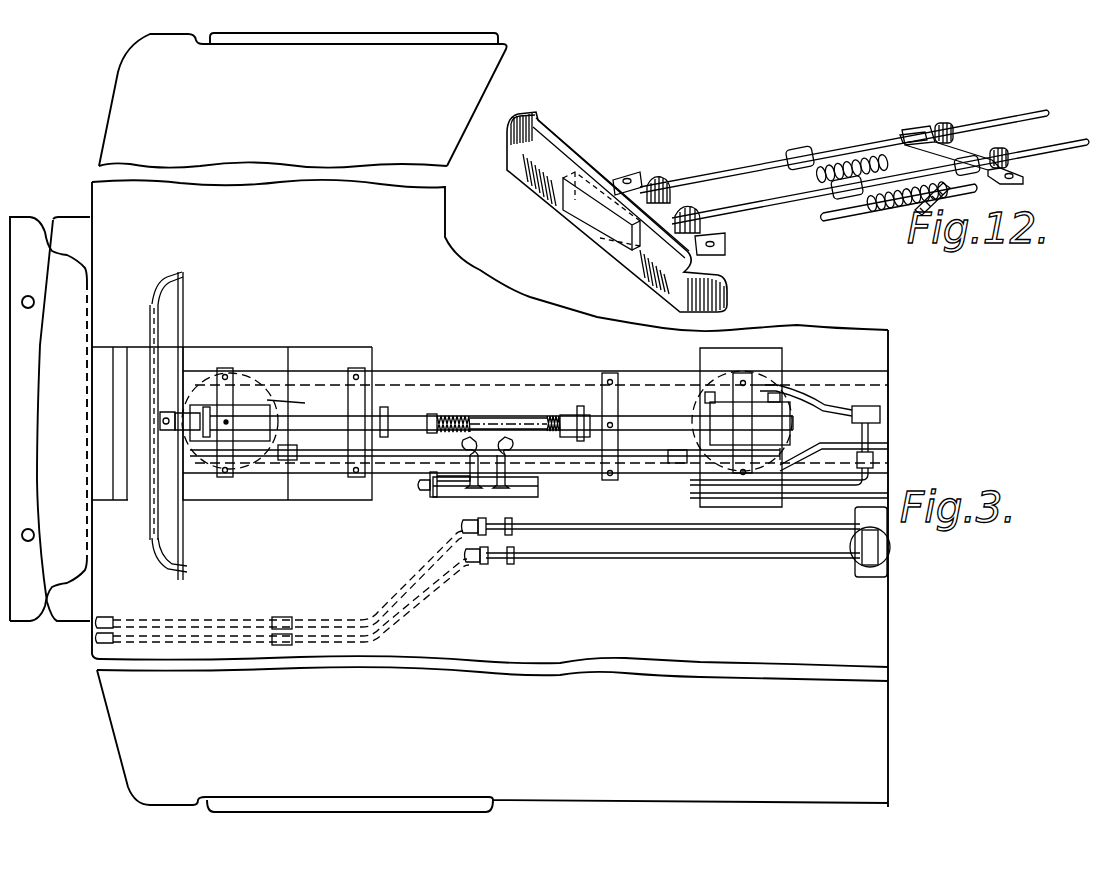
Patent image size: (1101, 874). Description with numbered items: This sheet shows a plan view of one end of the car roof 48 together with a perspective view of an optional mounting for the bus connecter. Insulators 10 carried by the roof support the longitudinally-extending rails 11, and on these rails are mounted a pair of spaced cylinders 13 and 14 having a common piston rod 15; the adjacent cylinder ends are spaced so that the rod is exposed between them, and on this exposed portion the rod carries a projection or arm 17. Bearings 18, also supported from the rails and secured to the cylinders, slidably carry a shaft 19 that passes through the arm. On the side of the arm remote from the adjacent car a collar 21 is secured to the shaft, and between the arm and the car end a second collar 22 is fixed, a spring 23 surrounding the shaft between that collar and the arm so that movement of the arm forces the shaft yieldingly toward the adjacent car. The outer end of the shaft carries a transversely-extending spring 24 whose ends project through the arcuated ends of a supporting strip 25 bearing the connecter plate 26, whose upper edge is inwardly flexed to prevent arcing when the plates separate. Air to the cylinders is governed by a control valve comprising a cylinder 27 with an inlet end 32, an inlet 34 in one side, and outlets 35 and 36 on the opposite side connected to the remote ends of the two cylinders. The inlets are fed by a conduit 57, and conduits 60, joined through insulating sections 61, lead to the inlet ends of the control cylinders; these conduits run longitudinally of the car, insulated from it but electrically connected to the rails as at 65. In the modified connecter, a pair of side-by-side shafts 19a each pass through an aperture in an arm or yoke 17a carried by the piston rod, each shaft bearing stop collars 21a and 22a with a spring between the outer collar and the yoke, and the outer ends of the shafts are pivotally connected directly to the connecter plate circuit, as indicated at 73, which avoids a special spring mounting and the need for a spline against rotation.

In FIG. 3, the insulators 10 is at (795, 413).
In FIG. 3, the rails 11 is at (490, 378).
In FIG. 3, the cylinder 13 is at (648, 410).
In FIG. 3, the cylinder 14 is at (323, 435).
In FIG. 12, the piston rod 15 is at (880, 217).
In FIG. 3, the arm 17 is at (566, 413).
In FIG. 12, the arm (yoke) 17a is at (891, 128).
In FIG. 3, the bearings 18 is at (226, 432).
In FIG. 3, the shaft 19 is at (403, 415).
In FIG. 12, the shafts 19a is at (763, 230).
In FIG. 3, the collar 21 is at (578, 432).
In FIG. 12, the stop collar 21a is at (914, 128).
In FIG. 3, the second collar 22 is at (432, 413).
In FIG. 12, the stop collar 22a is at (843, 226).
In FIG. 3, the spring 23 is at (453, 418).
In FIG. 12, the spring 23 is at (847, 147).
In FIG. 3, the transversely-extending spring 24 is at (182, 325).
In FIG. 3, the supporting strip 25 is at (166, 278).
In FIG. 3, the connecter plate 26 is at (150, 330).
In FIG. 12, the connecter plate 26 is at (550, 200).
In FIG. 3, the cylinder (control valve) 27 is at (476, 490).
In FIG. 3, the inlet end 32 is at (424, 500).
In FIG. 3, the inlet 34 is at (485, 482).
In FIG. 3, the outlet 35 is at (496, 453).
In FIG. 3, the outlet 36 is at (470, 450).
In FIG. 3, the car roof 48 is at (578, 614).
In FIG. 3, the conduit 57 is at (807, 477).
In FIG. 3, the conduits 60 is at (833, 502).
In FIG. 3, the insulating sections 61 is at (752, 551).
In FIG. 3, the electrical connection 65 is at (795, 452).
In FIG. 12, the pivotal connection 73 is at (605, 187).